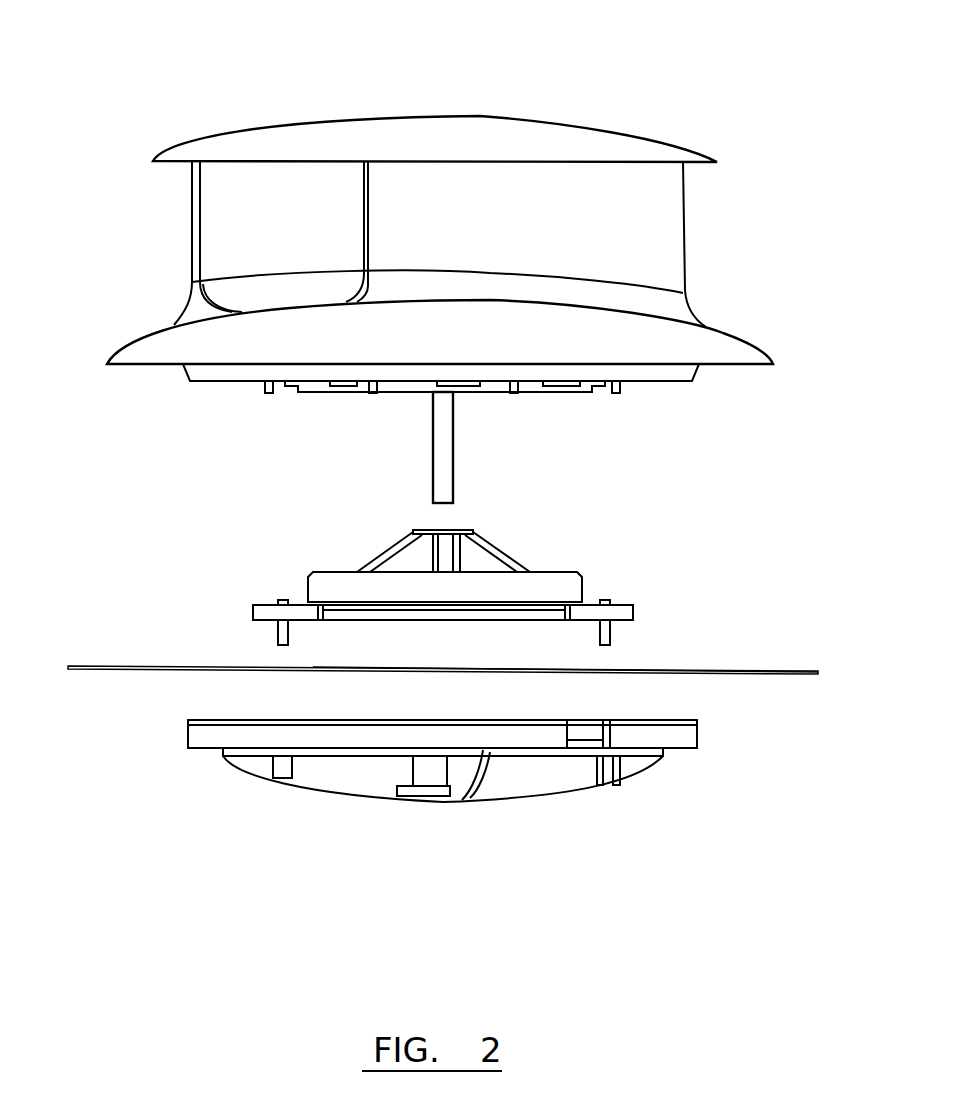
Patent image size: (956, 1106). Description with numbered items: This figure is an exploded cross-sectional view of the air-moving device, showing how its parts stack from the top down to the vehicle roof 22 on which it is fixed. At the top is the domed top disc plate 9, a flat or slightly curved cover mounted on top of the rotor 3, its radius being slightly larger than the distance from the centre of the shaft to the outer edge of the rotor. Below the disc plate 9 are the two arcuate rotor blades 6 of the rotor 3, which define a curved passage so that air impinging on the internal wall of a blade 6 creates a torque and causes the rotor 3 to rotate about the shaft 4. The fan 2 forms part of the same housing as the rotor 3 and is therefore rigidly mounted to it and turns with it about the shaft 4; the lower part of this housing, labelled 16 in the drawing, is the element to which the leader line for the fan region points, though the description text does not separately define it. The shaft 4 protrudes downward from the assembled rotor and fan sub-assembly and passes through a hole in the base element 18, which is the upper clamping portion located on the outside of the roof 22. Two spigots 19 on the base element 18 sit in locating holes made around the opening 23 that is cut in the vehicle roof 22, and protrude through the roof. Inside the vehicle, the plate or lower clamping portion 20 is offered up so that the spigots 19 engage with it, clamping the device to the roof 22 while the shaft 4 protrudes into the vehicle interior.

The fan 2 is at (90, 305).
The rotor 3 is at (117, 125).
The shaft 4 is at (430, 456).
The rotor blades 6 is at (636, 229).
The domed top disc plate 9 is at (562, 118).
The lower cover 16 is at (737, 339).
The base element 18 is at (500, 550).
The spigots 19 is at (272, 635).
The lower clamping portion 20 is at (345, 798).
The vehicle roof 22 is at (741, 664).
The opening 23 is at (409, 675).